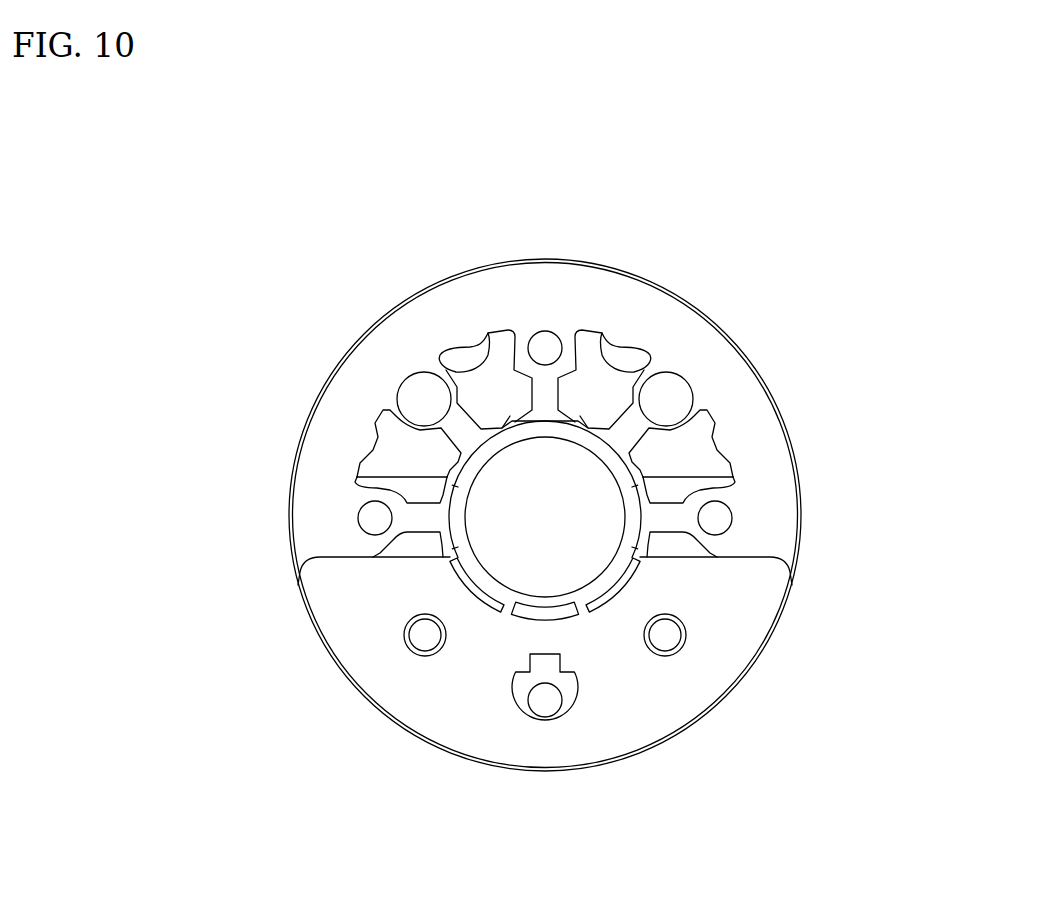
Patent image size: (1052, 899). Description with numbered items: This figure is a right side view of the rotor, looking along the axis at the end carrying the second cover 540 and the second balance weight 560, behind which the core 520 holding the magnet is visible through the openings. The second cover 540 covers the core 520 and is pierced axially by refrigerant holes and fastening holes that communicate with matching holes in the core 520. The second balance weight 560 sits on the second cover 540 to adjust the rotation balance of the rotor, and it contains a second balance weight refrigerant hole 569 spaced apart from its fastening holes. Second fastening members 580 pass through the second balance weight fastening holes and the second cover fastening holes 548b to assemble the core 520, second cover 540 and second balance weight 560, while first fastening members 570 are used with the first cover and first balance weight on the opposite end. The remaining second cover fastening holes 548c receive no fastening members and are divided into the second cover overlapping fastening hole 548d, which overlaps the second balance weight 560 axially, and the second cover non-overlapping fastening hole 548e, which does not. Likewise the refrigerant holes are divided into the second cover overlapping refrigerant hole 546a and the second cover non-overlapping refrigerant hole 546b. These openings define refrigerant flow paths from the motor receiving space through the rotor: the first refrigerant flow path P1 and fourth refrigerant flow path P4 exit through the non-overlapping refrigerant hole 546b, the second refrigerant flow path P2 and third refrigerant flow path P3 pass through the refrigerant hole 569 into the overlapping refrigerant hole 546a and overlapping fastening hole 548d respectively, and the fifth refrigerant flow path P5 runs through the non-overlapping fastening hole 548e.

The second cover 540 is at (584, 262).
The core 520 is at (598, 435).
The second cover fastening holes 548b is at (462, 350).
The second cover fastening holes 548c is at (514, 546).
The second cover overlapping fastening hole 548d is at (562, 790).
The second cover non-overlapping fastening hole 548e is at (536, 375).
The second cover overlapping refrigerant hole 546a is at (542, 744).
The second cover non-overlapping refrigerant hole 546b is at (536, 475).
The first fastening members 570 is at (422, 398).
The second fastening members 580 is at (420, 634).
The second balance weight 560 is at (542, 775).
The second balance weight refrigerant hole 569 is at (549, 790).
The first refrigerant flow path P1 is at (565, 345).
The second refrigerant flow path P2 is at (520, 672).
The third refrigerant flow path P3 is at (546, 692).
The fourth refrigerant flow path P4 is at (420, 484).
The fifth refrigerant flow path P5 is at (378, 522).